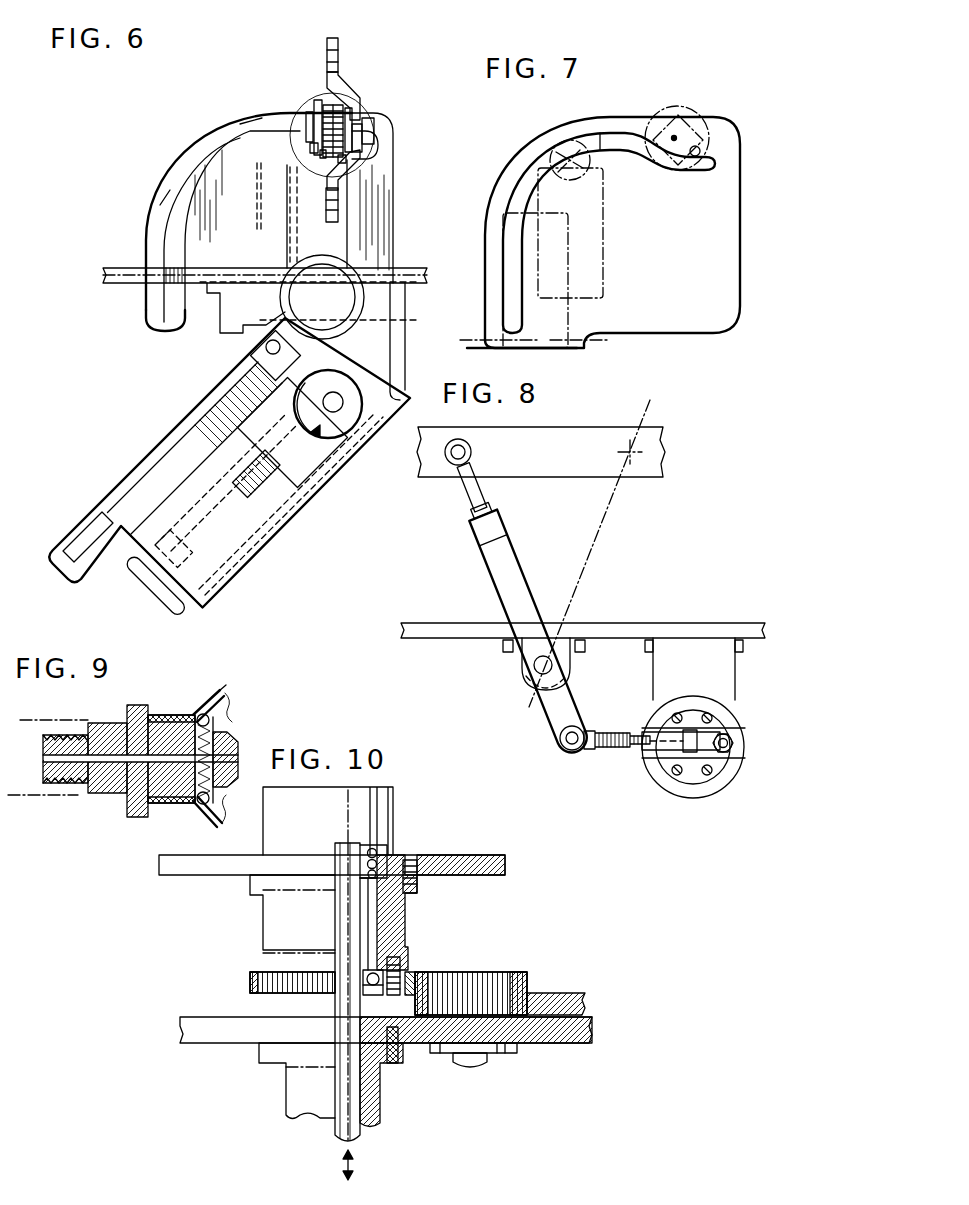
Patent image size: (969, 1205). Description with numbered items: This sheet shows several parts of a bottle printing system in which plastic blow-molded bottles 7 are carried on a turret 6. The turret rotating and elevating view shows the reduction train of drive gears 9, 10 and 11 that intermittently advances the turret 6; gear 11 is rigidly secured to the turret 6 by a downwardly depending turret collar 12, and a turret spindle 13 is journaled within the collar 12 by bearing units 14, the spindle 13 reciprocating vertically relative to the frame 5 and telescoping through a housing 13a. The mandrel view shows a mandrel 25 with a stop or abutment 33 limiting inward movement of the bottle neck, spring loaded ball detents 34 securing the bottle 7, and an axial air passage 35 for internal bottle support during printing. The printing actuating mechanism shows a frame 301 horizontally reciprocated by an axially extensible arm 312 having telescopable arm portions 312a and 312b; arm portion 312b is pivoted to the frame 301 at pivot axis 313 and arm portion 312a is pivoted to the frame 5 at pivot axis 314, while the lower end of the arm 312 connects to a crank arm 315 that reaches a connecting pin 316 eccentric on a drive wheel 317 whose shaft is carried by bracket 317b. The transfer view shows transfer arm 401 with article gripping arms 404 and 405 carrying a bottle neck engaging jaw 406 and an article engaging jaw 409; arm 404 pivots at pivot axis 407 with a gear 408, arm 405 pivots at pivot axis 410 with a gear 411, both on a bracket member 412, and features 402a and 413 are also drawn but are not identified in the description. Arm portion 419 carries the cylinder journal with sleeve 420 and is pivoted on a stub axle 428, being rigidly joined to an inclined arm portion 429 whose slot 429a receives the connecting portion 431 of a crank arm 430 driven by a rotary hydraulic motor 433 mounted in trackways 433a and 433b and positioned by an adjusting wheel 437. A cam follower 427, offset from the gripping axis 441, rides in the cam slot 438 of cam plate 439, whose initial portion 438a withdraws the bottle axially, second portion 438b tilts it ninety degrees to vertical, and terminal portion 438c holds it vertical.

In FIG. 6, the frame 5 is at (116, 272).
In FIG. 8, the frame 5 is at (621, 625).
In FIG. 10, the frame 5 is at (566, 1043).
In FIG. 10, the turret 6 is at (485, 863).
In FIG. 7, the bottles 7 is at (596, 223).
In FIG. 9, the bottles 7 is at (213, 690).
In FIG. 10, the drive gear 9 is at (562, 996).
In FIG. 10, the drive gear 10 is at (480, 975).
In FIG. 10, the drive gear 11 is at (250, 975).
In FIG. 10, the turret collar 12 is at (405, 915).
In FIG. 10, the turret spindle 13 is at (330, 1137).
In FIG. 10, the housing 13a is at (290, 1098).
In FIG. 10, the bearing units 14 is at (380, 975).
In FIG. 9, the mandrel 25 is at (175, 722).
In FIG. 9, the stop or abutment 33 is at (130, 810).
In FIG. 9, the spring loaded ball detents 34 is at (210, 718).
In FIG. 9, the axial air passage 35 is at (100, 742).
In FIG. 8, the frame 301 is at (580, 433).
In FIG. 8, the axially extensible arm 312 is at (518, 572).
In FIG. 8, the arm portion 312a is at (483, 551).
In FIG. 8, the arm portion 312b is at (470, 497).
In FIG. 8, the pivot axis 313 is at (472, 449).
In FIG. 8, the pivot axis 314 is at (530, 666).
In FIG. 8, the crank arm 315 is at (600, 751).
In FIG. 8, the connecting pin 316 is at (727, 752).
In FIG. 8, the drive wheel 317 is at (673, 783).
In FIG. 8, the bracket 317b is at (658, 666).
In FIG. 6, the transfer arm 401 is at (352, 52).
In FIG. 7, the base plate edge 402a is at (578, 336).
In FIG. 6, the article gripping arm 404 is at (352, 97).
In FIG. 6, the article gripping arm 405 is at (362, 150).
In FIG. 6, the bottle neck engaging jaw 406 is at (325, 45).
In FIG. 6, the pivot axis 407 is at (318, 128).
In FIG. 6, the gear 408 is at (330, 112).
In FIG. 6, the article engaging jaw 409 is at (330, 210).
In FIG. 6, the pivot axis 410 is at (312, 148).
In FIG. 6, the gear 411 is at (342, 158).
In FIG. 6, the bracket member 412 is at (309, 120).
In FIG. 6, the retainer 413 is at (330, 142).
In FIG. 6, the arm portion 419 is at (313, 246).
In FIG. 6, the sleeve 420 is at (370, 125).
In FIG. 7, the sleeve 420 is at (672, 106).
In FIG. 7, the cam follower 427 is at (698, 148).
In FIG. 6, the stub axle 428 is at (334, 316).
In FIG. 6, the inclined arm portion 429 is at (180, 416).
In FIG. 6, the slot 429a is at (166, 450).
In FIG. 6, the crank arm 430 is at (345, 385).
In FIG. 6, the connecting portion 431 is at (258, 353).
In FIG. 6, the rotary hydraulic motor 433 is at (305, 474).
In FIG. 6, the trackway 433a is at (212, 606).
In FIG. 6, the trackway 433b is at (153, 560).
In FIG. 6, the adjusting wheel 437 is at (160, 590).
In FIG. 6, the cam slot 438 is at (208, 160).
In FIG. 7, the cam slot 438 is at (609, 233).
In FIG. 7, the initial portion of cam track 438a is at (680, 171).
In FIG. 6, the second portion of cam track 438b is at (245, 133).
In FIG. 7, the second portion of cam track 438b is at (603, 130).
In FIG. 6, the terminal portion of cam track 438c is at (186, 196).
In FIG. 7, the terminal portion of cam track 438c is at (548, 172).
In FIG. 6, the cam plate 439 is at (241, 236).
In FIG. 7, the cam plate 439 is at (697, 270).
In FIG. 7, the gripping axis 441 is at (677, 136).